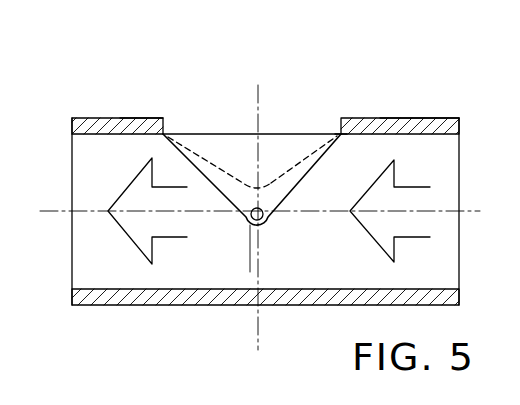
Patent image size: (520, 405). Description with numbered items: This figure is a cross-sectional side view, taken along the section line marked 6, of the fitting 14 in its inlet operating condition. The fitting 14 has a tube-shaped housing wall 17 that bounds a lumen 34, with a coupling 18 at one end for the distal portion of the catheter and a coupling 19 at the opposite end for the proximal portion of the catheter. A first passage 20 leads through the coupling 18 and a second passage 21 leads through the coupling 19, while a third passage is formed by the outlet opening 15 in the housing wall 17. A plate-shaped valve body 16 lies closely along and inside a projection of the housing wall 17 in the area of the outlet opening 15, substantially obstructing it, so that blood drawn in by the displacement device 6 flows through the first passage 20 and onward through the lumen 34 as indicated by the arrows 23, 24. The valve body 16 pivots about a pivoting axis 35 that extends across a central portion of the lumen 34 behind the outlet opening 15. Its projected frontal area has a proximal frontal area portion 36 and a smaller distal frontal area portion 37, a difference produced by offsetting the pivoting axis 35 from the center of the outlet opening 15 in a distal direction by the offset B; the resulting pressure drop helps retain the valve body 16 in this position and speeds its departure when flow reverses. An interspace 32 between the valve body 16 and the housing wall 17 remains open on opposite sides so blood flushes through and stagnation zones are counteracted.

The fitting 14 is at (417, 97).
The outlet opening 15 is at (292, 124).
The valve body 16 is at (303, 172).
The housing wall 17 is at (116, 113).
The coupling 18 is at (440, 118).
The coupling 19 is at (93, 118).
The first passage 20 is at (443, 153).
The second passage 21 is at (82, 162).
The arrow 23 is at (382, 248).
The arrow 24 is at (135, 243).
The interspace 32 is at (340, 136).
The lumen 34 is at (200, 283).
The pivoting axis 35 is at (264, 220).
The proximal frontal area portion 36 is at (245, 160).
The distal frontal area portion 37 is at (293, 160).
The offset B is at (220, 254).
The displacement device 6 is at (252, 97).